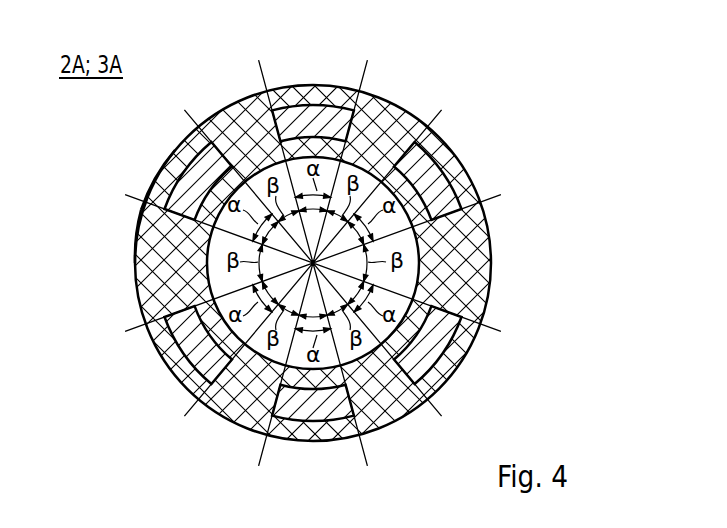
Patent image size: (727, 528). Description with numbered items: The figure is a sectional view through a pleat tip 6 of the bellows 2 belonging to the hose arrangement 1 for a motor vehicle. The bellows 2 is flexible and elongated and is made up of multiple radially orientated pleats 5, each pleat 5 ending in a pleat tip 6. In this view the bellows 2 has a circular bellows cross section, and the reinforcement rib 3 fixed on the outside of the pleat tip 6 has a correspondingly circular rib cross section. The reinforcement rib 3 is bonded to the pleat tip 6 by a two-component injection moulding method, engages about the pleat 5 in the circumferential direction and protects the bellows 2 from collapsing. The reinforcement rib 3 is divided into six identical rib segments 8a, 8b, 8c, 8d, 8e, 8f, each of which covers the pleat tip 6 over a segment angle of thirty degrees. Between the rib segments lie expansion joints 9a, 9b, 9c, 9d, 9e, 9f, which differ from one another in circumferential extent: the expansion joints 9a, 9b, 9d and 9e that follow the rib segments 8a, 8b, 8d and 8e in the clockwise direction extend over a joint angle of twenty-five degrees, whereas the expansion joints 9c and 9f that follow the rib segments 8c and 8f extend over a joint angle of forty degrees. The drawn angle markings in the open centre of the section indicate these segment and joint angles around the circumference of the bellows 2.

The hose arrangement 1 is at (557, 130).
The bellows 2 is at (457, 95).
The reinforcement rib 3 is at (455, 177).
The pleat 5 is at (157, 172).
The pleat tip 6 is at (141, 210).
The rib segment 8a is at (183, 167).
The rib segment 8b is at (328, 92).
The rib segment 8c is at (432, 170).
The rib segment 8d is at (428, 345).
The rib segment 8e is at (313, 412).
The rib segment 8f is at (198, 352).
The expansion joint 9a is at (237, 132).
The expansion joint 9b is at (388, 137).
The expansion joint 9c is at (453, 257).
The expansion joint 9d is at (387, 400).
The expansion joint 9e is at (248, 398).
The expansion joint 9f is at (160, 258).